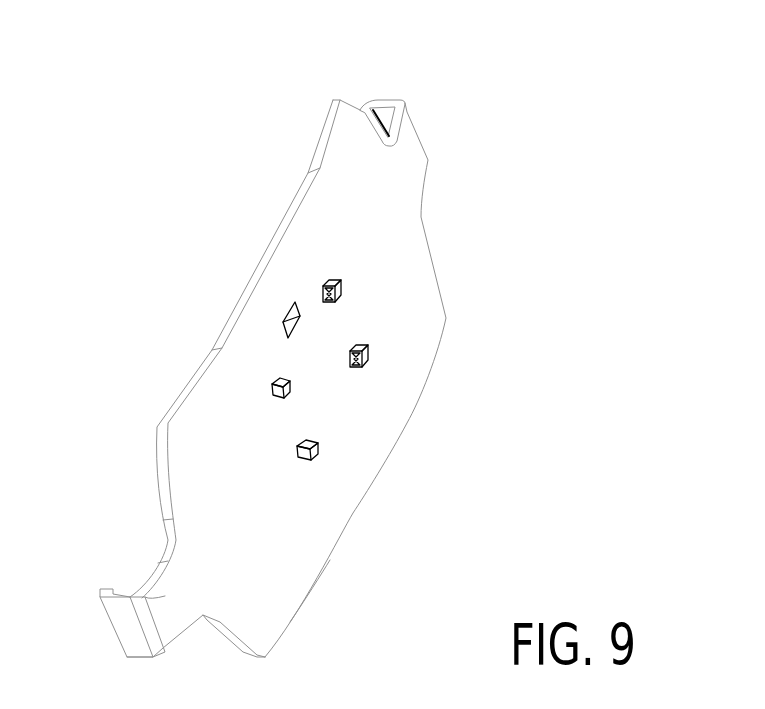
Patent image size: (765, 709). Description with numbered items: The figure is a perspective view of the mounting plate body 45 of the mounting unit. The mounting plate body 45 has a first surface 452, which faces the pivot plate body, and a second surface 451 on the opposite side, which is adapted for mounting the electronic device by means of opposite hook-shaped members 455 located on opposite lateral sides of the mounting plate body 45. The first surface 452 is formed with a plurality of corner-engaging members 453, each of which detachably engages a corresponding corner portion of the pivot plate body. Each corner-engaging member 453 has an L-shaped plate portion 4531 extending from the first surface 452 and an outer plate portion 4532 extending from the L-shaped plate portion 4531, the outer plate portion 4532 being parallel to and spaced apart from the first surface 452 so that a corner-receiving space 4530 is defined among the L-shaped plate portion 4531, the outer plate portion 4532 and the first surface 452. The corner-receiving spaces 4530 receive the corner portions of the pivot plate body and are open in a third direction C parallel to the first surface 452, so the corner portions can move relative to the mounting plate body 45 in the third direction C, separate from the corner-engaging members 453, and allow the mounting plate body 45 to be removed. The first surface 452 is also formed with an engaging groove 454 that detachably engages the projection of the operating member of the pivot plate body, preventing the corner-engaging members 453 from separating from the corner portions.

The mounting plate body 45 is at (449, 245).
The second surface 451 is at (183, 388).
The first surface 452 is at (330, 513).
The corner-engaging member 453 is at (343, 285).
The corner-receiving space 4530 is at (322, 287).
The L-shaped plate portion 4531 is at (333, 280).
The outer plate portion 4532 is at (342, 292).
The engaging groove 454 is at (308, 314).
The hook-shaped member 455 is at (380, 103).
The third direction C is at (273, 183).